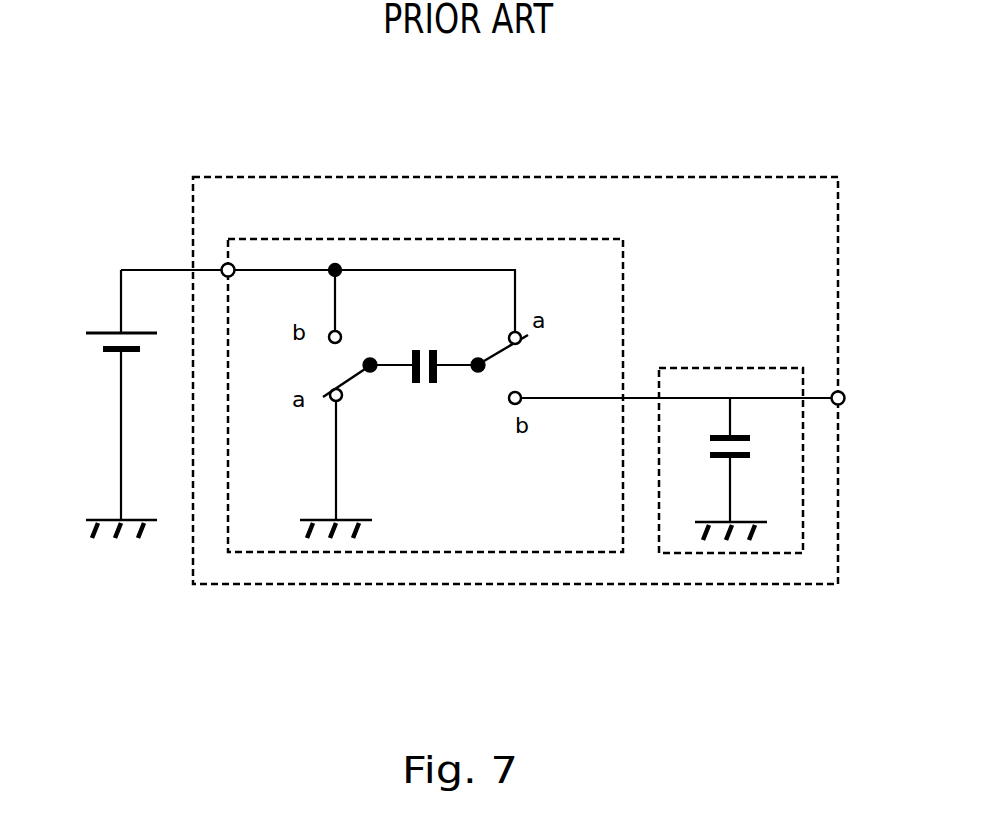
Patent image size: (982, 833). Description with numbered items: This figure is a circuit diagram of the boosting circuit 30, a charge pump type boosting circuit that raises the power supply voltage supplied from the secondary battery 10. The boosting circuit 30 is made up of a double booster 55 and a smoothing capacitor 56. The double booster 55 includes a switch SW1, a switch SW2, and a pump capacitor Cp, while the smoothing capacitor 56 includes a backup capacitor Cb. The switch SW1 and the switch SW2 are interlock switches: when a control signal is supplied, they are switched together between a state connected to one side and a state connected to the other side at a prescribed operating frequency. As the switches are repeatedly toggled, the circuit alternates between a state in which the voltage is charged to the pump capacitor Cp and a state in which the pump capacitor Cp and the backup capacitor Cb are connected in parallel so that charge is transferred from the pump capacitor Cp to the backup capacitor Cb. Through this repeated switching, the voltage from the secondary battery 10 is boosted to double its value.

The secondary battery 10 is at (108, 320).
The boosting circuit 30 is at (783, 178).
The double booster 55 is at (604, 240).
The smoothing capacitor 56 is at (775, 368).
The switch SW1 is at (358, 382).
The switch SW2 is at (497, 350).
The pump capacitor Cp is at (425, 385).
The backup capacitor Cb is at (748, 447).